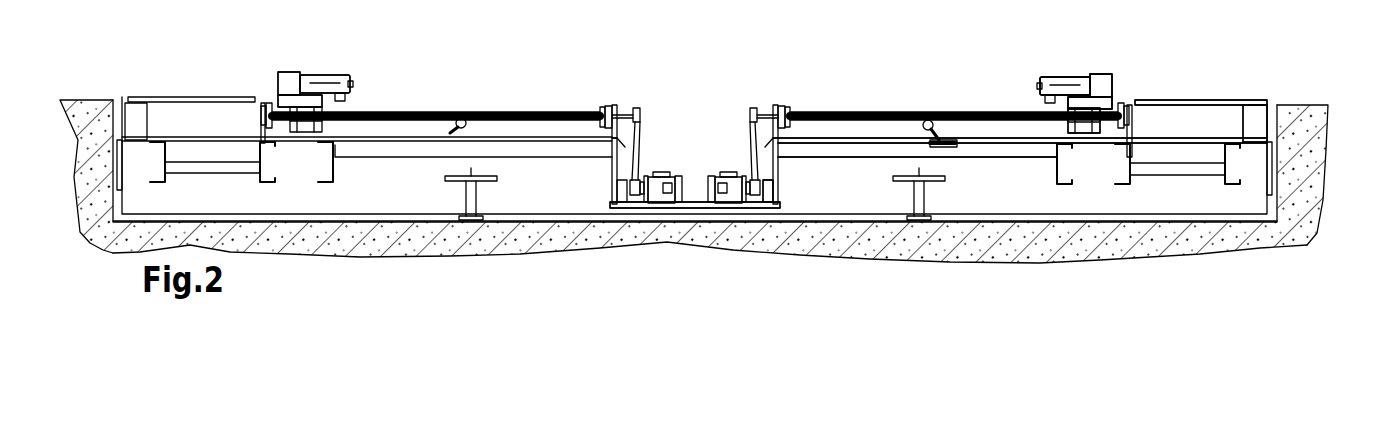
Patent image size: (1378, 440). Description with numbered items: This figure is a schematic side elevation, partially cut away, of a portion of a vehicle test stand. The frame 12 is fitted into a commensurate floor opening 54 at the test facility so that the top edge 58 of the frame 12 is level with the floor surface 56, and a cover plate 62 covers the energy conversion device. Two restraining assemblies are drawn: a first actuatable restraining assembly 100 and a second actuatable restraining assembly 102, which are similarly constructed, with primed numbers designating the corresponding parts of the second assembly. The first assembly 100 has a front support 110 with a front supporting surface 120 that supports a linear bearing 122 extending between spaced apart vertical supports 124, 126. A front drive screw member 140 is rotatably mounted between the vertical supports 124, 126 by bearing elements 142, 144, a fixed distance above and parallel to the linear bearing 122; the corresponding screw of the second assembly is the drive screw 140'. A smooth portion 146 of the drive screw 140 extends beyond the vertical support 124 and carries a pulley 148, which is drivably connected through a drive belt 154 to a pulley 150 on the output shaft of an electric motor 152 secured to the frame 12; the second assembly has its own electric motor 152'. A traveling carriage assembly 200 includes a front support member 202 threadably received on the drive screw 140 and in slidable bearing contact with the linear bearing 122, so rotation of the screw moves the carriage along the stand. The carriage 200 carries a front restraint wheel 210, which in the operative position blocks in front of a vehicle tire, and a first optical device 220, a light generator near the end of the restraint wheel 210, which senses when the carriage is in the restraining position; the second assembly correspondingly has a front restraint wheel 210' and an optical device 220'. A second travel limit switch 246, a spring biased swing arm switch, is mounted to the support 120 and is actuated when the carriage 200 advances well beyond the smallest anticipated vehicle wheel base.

The frame 12 is at (1281, 126).
The floor opening 54 is at (118, 96).
The floor surface 56 is at (1300, 104).
The top edge 58 is at (1267, 103).
The cover plate 62 is at (1166, 100).
The first actuatable restraining assembly 100 is at (1059, 58).
The second actuatable restraining assembly 102 is at (309, 59).
The front support 110 is at (920, 50).
The front supporting surface 120 is at (852, 138).
The linear bearing 122 is at (887, 138).
The vertical support 124 is at (800, 108).
The vertical support 126 is at (1137, 125).
The front drive screw member 140 is at (954, 100).
The front drive screw member 140' is at (430, 107).
The bearing element 142 is at (778, 108).
The bearing element 144 is at (1124, 110).
The smooth portion 146 is at (770, 117).
The pulley 148 is at (752, 108).
The pulley 150 is at (781, 212).
The electric motor 152 is at (725, 173).
The electric motor 152' is at (608, 191).
The drive belt 154 is at (779, 163).
The carriage assembly 200 is at (1082, 52).
The front support member 202 is at (1063, 131).
The front restraint wheel 210 is at (1032, 75).
The front restraint wheel 210' is at (348, 54).
The first optical device 220 is at (1051, 105).
The first optical device 220' is at (375, 81).
The second travel limit switch 246 is at (927, 142).